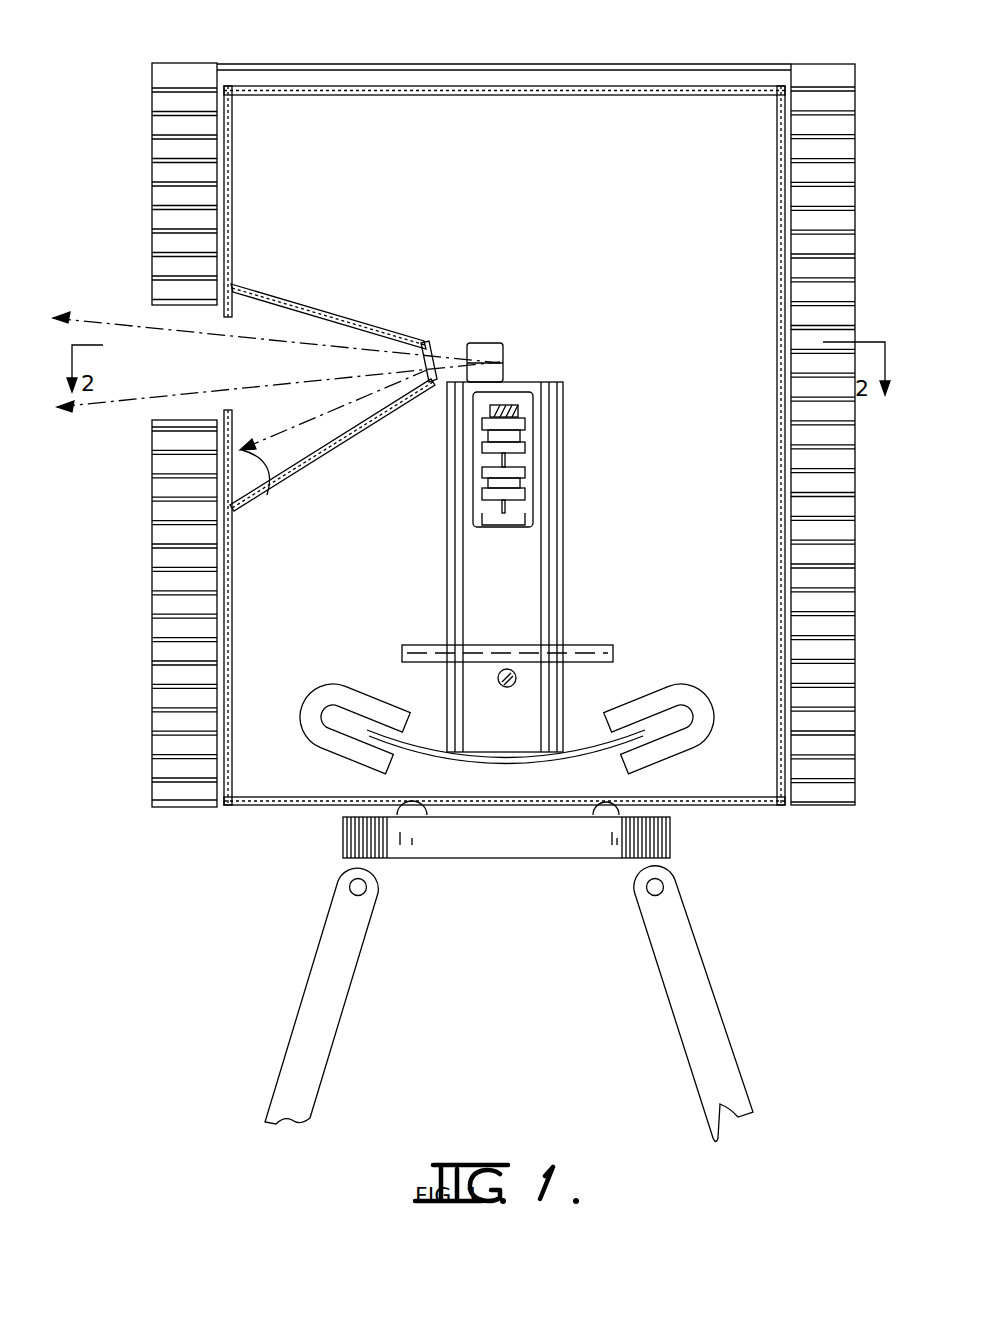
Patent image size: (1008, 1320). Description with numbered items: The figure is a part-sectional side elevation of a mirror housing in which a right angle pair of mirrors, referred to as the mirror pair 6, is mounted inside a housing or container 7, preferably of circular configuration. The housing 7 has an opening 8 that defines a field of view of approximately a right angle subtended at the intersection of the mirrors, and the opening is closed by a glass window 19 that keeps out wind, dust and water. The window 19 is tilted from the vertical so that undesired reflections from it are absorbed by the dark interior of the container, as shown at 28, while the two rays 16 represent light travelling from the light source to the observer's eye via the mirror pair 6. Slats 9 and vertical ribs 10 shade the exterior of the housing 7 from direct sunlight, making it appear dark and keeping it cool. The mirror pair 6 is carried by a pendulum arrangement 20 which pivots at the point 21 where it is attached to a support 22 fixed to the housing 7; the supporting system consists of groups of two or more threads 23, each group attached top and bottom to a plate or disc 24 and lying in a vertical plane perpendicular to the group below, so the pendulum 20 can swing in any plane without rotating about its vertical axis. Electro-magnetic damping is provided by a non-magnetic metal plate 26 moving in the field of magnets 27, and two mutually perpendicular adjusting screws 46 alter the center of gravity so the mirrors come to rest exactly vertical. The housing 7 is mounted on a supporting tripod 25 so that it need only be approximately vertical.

The mirror pair 6 is at (495, 336).
The housing 7 is at (693, 90).
The opening 8 is at (228, 396).
The slats 9 is at (843, 205).
The vertical ribs 10 is at (168, 143).
The rays 16 is at (178, 393).
The glass window 19 is at (432, 340).
The pendulum arrangement 20 is at (447, 548).
The pivot point 21 is at (527, 425).
The support 22 is at (518, 412).
The threads 23 is at (523, 437).
The plate or disc 24 is at (527, 448).
The supporting tripod 25 is at (343, 848).
The non-magnetic metal plate 26 is at (367, 745).
The magnets 27 is at (330, 692).
The absorbed reflection 28 is at (267, 495).
The adjusting screws 46 is at (502, 670).